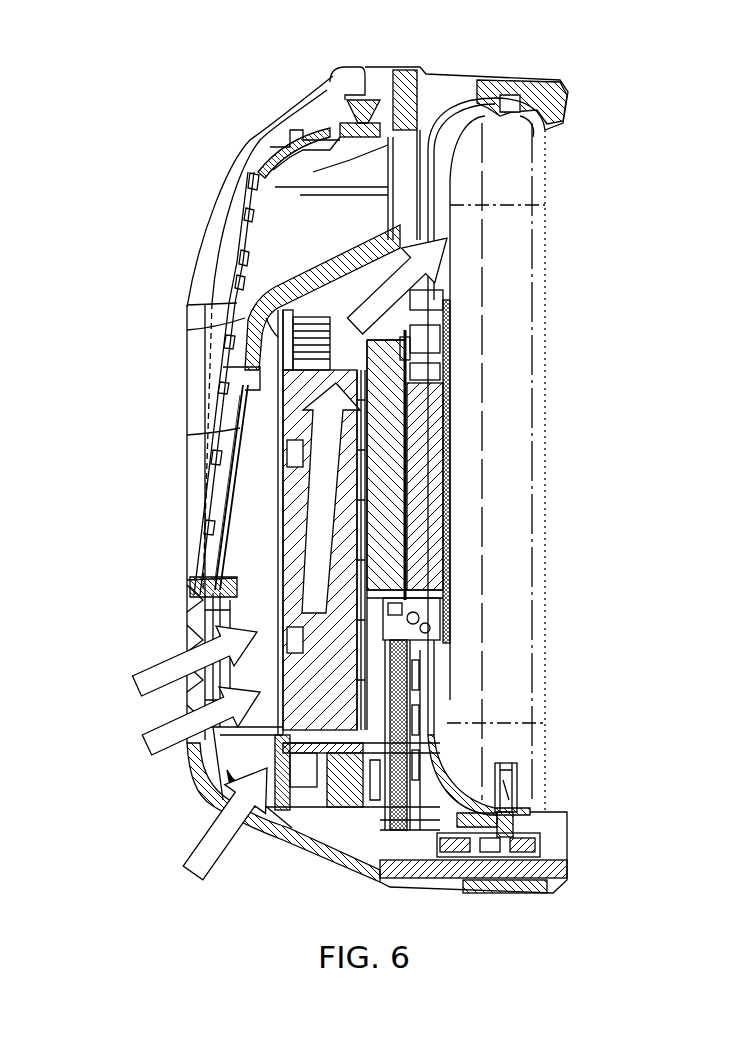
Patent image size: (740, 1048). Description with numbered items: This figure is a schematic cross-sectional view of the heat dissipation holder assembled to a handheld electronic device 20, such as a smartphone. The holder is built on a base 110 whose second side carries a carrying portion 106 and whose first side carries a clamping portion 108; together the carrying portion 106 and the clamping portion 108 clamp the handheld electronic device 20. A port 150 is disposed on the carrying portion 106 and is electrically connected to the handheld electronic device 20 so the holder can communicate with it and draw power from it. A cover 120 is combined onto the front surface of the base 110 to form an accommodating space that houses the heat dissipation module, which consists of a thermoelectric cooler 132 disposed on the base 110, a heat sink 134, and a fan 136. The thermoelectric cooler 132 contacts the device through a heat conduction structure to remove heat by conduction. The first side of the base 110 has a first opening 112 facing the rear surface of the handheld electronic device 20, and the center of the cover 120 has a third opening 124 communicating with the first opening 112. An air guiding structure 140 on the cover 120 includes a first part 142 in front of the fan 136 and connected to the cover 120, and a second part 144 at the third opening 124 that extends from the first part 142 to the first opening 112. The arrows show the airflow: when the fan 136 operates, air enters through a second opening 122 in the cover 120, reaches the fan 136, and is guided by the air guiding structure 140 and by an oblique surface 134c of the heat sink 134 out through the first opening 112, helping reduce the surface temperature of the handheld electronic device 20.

The handheld electronic device 20 is at (497, 363).
The carrying portion 106 is at (567, 850).
The clamping portion 108 is at (452, 78).
The base 110 is at (450, 648).
The first opening 112 is at (447, 211).
The cover 120 is at (287, 107).
The second opening 122 is at (223, 802).
The third opening 124 is at (298, 218).
The thermoelectric cooler 132 is at (430, 440).
The heat sink 134 is at (390, 507).
The oblique surface 134c is at (415, 283).
The fan 136 is at (313, 720).
The air guiding structure 140 is at (133, 288).
The first part 142 is at (233, 438).
The second part 144 is at (240, 292).
The port 150 is at (520, 775).